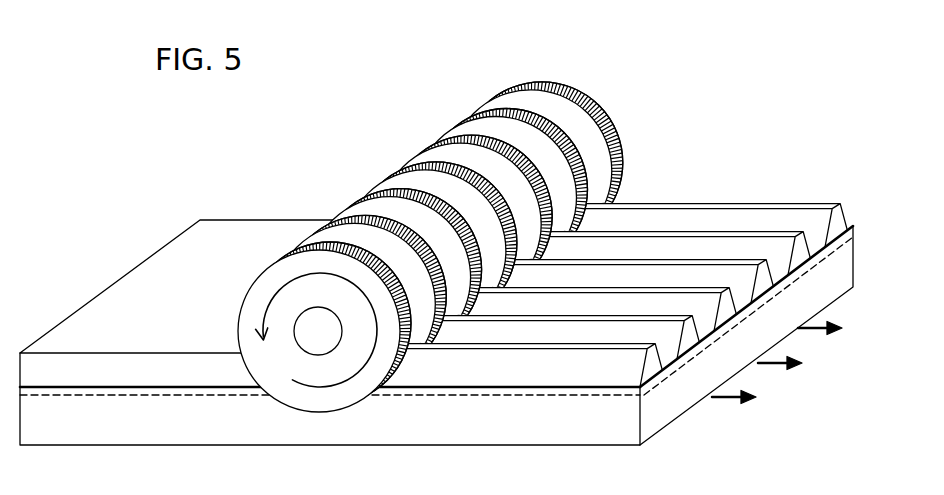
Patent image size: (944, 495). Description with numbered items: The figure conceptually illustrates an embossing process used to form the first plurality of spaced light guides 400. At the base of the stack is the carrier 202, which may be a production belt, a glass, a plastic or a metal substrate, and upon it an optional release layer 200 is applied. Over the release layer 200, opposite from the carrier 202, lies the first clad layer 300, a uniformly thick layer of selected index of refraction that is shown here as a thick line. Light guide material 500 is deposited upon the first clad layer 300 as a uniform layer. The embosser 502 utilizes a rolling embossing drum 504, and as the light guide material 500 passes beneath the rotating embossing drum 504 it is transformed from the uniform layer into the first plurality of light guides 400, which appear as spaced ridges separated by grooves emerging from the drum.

The release layer 200 is at (653, 391).
The carrier 202 is at (167, 432).
The first clad layer 300 is at (512, 388).
The first plurality of spaced light guides 400 is at (820, 197).
The light guide material 500 is at (157, 270).
The embosser 502 is at (407, 157).
The embossing drum 504 is at (303, 341).